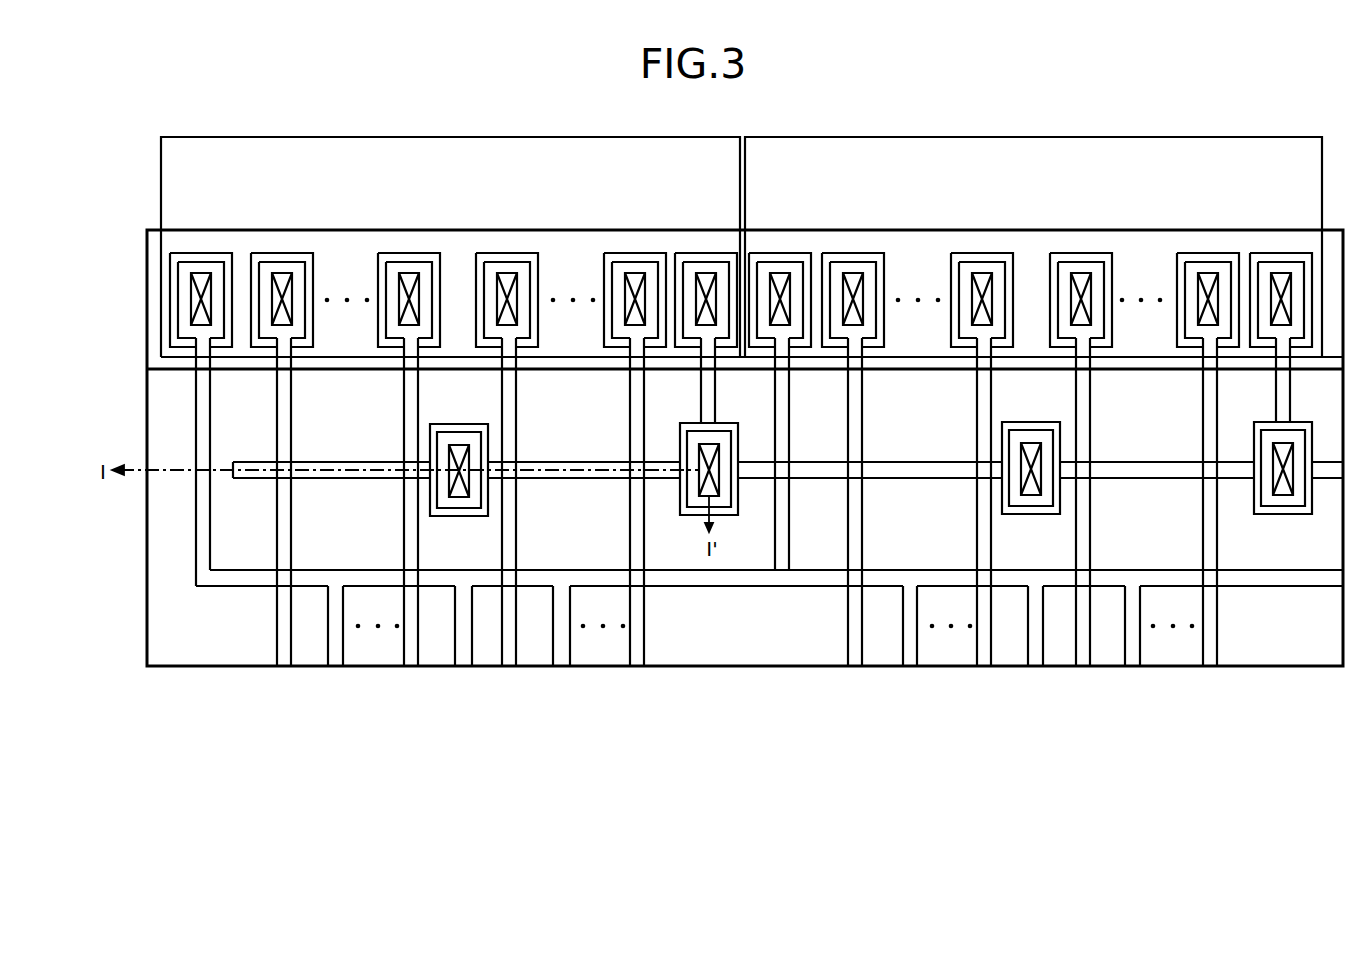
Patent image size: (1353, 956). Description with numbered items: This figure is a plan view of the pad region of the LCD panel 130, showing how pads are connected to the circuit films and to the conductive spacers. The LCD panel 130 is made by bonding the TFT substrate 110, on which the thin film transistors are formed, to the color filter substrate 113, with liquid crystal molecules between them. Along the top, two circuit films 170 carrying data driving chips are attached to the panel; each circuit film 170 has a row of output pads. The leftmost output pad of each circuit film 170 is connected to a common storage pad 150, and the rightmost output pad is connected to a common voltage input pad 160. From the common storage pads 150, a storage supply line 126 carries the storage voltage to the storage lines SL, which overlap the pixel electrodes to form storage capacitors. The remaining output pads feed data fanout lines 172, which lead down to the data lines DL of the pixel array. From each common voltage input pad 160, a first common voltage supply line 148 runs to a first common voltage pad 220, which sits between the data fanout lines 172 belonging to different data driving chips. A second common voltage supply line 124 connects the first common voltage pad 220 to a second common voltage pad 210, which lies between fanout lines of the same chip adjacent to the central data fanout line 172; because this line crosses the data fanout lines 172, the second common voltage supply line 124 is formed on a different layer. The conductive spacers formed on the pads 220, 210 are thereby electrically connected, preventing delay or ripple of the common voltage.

The LCD panel 130 is at (92, 313).
The TFT substrate 110 is at (147, 316).
The color filter substrate 113 is at (147, 423).
The circuit film 170 is at (161, 176).
The common storage pad 150 is at (197, 248).
The common voltage input pad 160 is at (704, 248).
The data fanout line 172 is at (710, 536).
The storage supply line 126 is at (220, 590).
The second common voltage supply line 124 is at (1142, 506).
The second common voltage pad 210 is at (1025, 518).
The first common voltage pad 220 is at (1299, 416).
The first common voltage supply line 148 is at (1274, 408).
The data line DL is at (1203, 413).
The storage line SL is at (1131, 702).